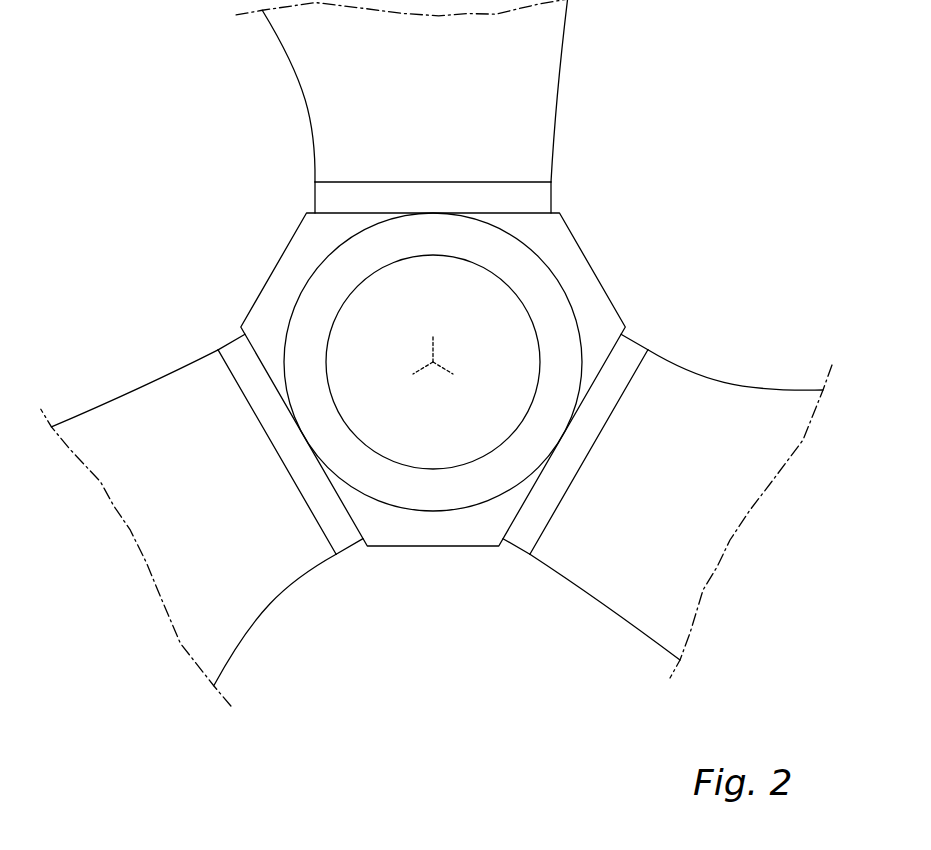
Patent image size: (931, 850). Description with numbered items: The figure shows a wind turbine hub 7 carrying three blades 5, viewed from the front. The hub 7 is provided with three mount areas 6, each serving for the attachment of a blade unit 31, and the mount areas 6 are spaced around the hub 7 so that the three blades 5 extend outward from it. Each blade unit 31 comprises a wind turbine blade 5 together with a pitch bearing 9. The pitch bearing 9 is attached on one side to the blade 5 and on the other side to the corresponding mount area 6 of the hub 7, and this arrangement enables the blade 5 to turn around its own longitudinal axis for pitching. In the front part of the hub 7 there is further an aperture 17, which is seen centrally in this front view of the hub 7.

The blade unit 31 is at (416, 372).
The wind turbine hub 7 is at (407, 525).
The aperture 17 is at (360, 316).
The mount area 6 is at (477, 212).
The pitch bearing 9 is at (211, 478).
The wind turbine blade 5 is at (620, 558).